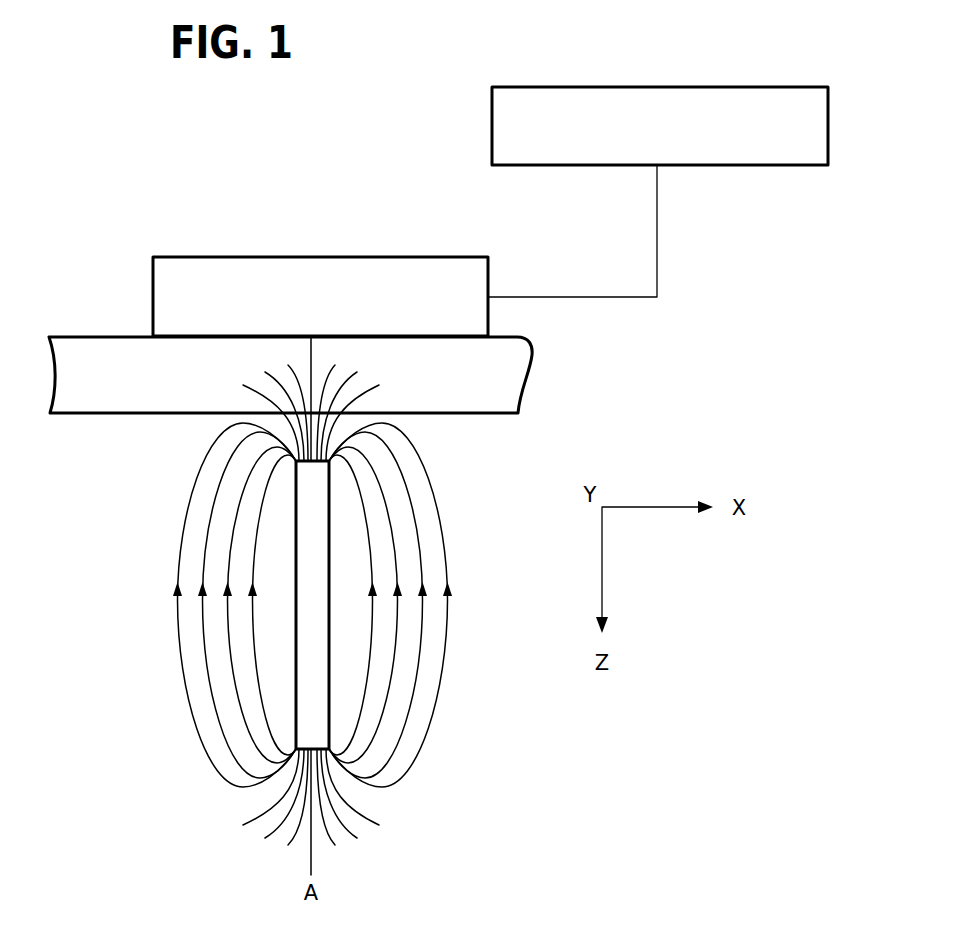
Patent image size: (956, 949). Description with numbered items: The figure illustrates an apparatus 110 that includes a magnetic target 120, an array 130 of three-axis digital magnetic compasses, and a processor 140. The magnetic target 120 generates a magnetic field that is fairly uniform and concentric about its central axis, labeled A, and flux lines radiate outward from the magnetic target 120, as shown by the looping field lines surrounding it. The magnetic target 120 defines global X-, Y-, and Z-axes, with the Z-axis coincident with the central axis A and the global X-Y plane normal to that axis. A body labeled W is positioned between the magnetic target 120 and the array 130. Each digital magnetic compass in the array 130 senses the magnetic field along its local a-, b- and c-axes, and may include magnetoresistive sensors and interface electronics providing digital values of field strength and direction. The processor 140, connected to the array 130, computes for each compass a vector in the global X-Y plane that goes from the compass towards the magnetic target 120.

The apparatus 110 is at (116, 177).
The magnetic target 120 is at (452, 484).
The array of three-axis digital magnetic compasses 130 is at (193, 257).
The processor 140 is at (490, 125).
The wafer W is at (526, 378).